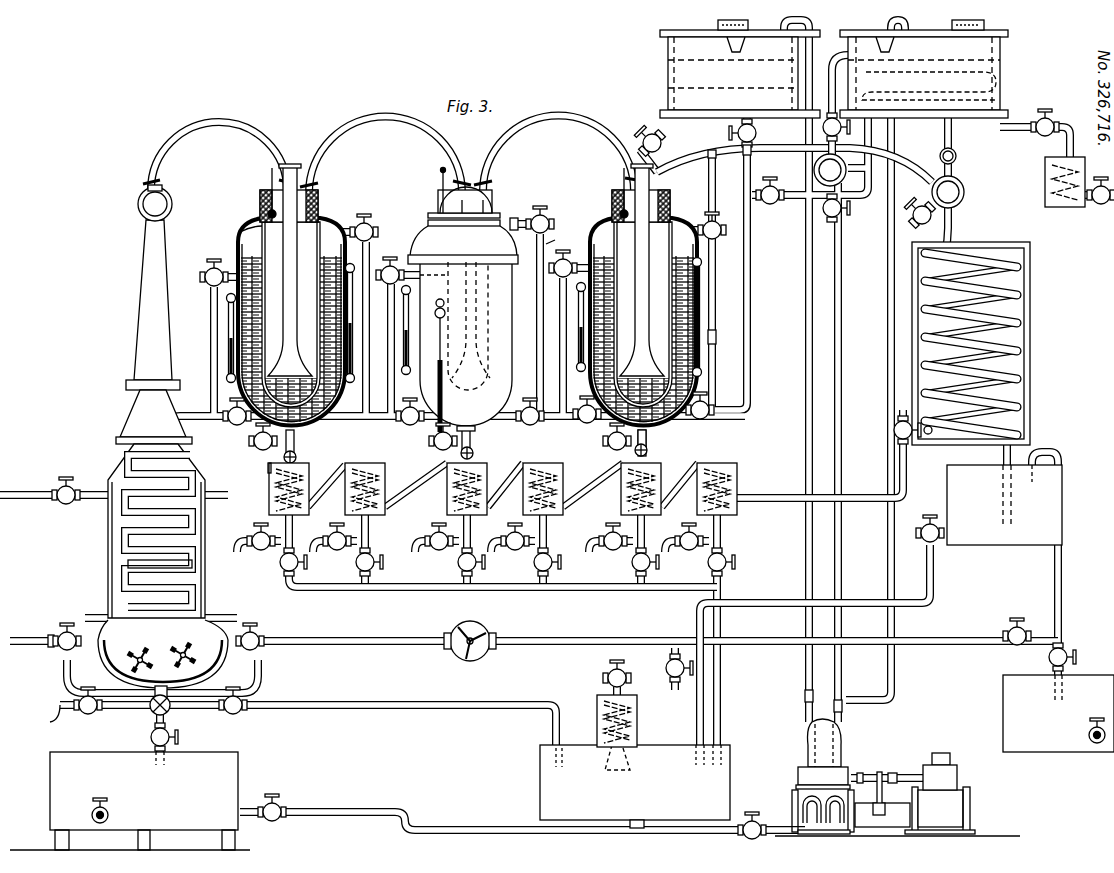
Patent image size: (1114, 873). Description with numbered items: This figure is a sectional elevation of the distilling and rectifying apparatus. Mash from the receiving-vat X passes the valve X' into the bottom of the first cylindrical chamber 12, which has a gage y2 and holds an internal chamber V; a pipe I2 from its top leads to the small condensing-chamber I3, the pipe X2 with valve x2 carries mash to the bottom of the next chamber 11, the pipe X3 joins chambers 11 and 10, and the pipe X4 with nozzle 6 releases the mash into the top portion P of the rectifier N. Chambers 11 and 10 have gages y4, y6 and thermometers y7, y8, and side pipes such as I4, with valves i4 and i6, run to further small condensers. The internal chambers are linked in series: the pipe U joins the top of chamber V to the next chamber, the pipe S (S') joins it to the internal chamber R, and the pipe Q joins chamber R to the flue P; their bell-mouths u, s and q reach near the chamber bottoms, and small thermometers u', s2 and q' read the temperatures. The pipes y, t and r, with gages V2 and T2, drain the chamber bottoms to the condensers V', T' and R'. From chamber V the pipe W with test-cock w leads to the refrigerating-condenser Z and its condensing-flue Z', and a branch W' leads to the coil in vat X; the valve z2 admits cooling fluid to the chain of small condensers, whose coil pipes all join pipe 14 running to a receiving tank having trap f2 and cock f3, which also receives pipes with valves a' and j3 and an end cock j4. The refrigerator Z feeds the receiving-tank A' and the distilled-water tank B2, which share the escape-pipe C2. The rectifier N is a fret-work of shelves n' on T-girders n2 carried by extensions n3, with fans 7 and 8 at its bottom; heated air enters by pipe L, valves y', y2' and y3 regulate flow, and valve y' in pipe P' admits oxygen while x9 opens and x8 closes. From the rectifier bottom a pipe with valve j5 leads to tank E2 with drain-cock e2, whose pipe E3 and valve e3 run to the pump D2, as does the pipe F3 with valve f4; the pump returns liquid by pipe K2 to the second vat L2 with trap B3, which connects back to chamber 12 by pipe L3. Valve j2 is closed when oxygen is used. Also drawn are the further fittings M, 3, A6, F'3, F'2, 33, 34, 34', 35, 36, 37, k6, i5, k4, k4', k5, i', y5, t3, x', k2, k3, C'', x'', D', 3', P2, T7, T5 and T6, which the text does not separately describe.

The pipe Q is at (224, 126).
The valve S' is at (385, 170).
The pipe U is at (553, 117).
The pipe W is at (794, 159).
The pipe W' is at (831, 102).
The supply pipe M is at (35, 485).
The nozzle 6 is at (182, 417).
The extensions n3 is at (208, 617).
The pipe L is at (34, 650).
The pipe P' is at (660, 630).
The pipe 14 is at (512, 587).
The pipe A6 is at (768, 606).
The valve z2 is at (864, 498).
The outlet pipe 3 is at (995, 454).
The pipe E3 is at (375, 810).
The pipe F'3 is at (617, 843).
The pipe F3 is at (433, 702).
The connecting pipes 33 is at (503, 491).
The elbow pipes 36 is at (473, 555).
The flue P is at (154, 332).
The rectifier N is at (203, 522).
The fret-work of shelves n' is at (141, 531).
The T-girders n2 is at (126, 565).
The fan 7 is at (136, 662).
The fan 8 is at (177, 652).
The internal chamber R is at (291, 323).
The bell-mouth q is at (290, 270).
The thermometer q' is at (262, 193).
The chamber 10 is at (243, 224).
The internal chamber V is at (643, 323).
The bell-mouth u is at (642, 270).
The thermometer u' is at (614, 192).
The pipe S is at (463, 320).
The bell-mouth s is at (469, 326).
The thermometer s2 is at (440, 186).
The pipe t is at (466, 441).
The chamber 11 is at (420, 248).
The valve k6 is at (210, 272).
The valve i6 is at (361, 225).
The valve i5 is at (386, 270).
The valve i4 is at (537, 219).
The pipe I4 is at (556, 236).
The chamber 12 is at (563, 233).
The valve k4 is at (563, 257).
The valve i' is at (714, 225).
The thermometer y8 is at (226, 330).
The gage y6 is at (356, 310).
The thermometer y7 is at (402, 332).
The gauge y5 is at (577, 290).
The gage y2 is at (715, 317).
The pipe I2 is at (718, 340).
The condensing-chamber I3 is at (714, 155).
The test-cock w is at (648, 139).
The valve t3 is at (750, 133).
The valve x' is at (770, 197).
The valve k2 is at (847, 208).
The valve k3 is at (770, 206).
The pipe L3 is at (750, 154).
The gage y4 is at (944, 160).
The trap B3 is at (716, 34).
The vat L2 is at (740, 77).
The tank C'' is at (924, 69).
The receiving-vat X is at (938, 76).
The refrigerating-condenser Z is at (981, 343).
The condensing-flue Z' is at (970, 344).
The valve x'' is at (1072, 165).
The valve 34 is at (907, 418).
The receiving-tank A' is at (1004, 505).
The valve a' is at (924, 528).
The valve x9 is at (1023, 630).
The valve x8 is at (1068, 652).
The distilled-water tank B2 is at (1058, 713).
The pipe K2 is at (806, 696).
The escape-pipe C2 is at (846, 704).
The pump D2 is at (800, 772).
The pump D' is at (897, 794).
The tank E2 is at (130, 801).
The drain-cock e2 is at (110, 810).
The valve e3 is at (280, 804).
The tank F'2 is at (635, 786).
The condenser or trap f2 is at (636, 710).
The cock f3 is at (622, 670).
The valve f4 is at (752, 836).
The valve 3' is at (679, 674).
The cock j4 is at (76, 707).
The valve j2 is at (172, 710).
The valve j3 is at (233, 708).
The valve j5 is at (156, 737).
The valve wheel P2 is at (492, 636).
The valve y' is at (257, 636).
The valve y2' is at (62, 633).
The valve y3 is at (66, 480).
The pipe X4 is at (229, 419).
The pipe X3 is at (379, 419).
The pipe X2 is at (531, 419).
The valve k4' is at (580, 418).
The valve k5 is at (700, 415).
The valve X' is at (257, 441).
The valve x2 is at (612, 436).
The pipe y is at (658, 439).
The pipe r is at (294, 449).
The gage T2 is at (449, 457).
The gage V2 is at (623, 452).
The condensing-chamber R' is at (298, 482).
The coil box T7 is at (374, 481).
The condensing-chamber T' is at (476, 483).
The coil box T5 is at (553, 480).
The condenser V' is at (651, 482).
The coil box T6 is at (726, 485).
The pipe 34' is at (258, 474).
The valves 35 is at (494, 533).
The valves 37 is at (501, 562).